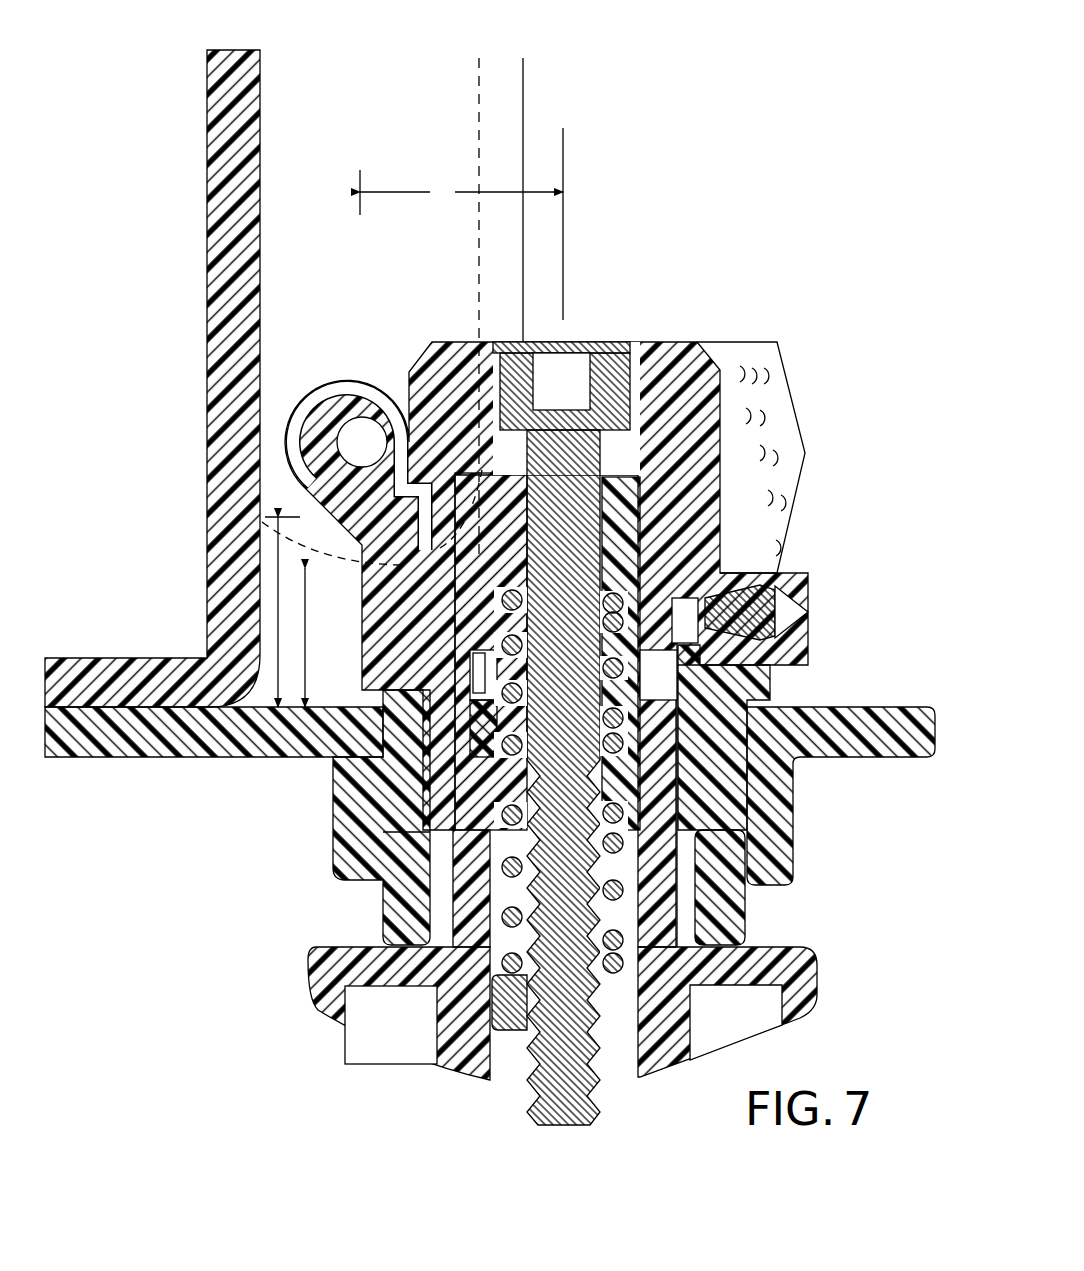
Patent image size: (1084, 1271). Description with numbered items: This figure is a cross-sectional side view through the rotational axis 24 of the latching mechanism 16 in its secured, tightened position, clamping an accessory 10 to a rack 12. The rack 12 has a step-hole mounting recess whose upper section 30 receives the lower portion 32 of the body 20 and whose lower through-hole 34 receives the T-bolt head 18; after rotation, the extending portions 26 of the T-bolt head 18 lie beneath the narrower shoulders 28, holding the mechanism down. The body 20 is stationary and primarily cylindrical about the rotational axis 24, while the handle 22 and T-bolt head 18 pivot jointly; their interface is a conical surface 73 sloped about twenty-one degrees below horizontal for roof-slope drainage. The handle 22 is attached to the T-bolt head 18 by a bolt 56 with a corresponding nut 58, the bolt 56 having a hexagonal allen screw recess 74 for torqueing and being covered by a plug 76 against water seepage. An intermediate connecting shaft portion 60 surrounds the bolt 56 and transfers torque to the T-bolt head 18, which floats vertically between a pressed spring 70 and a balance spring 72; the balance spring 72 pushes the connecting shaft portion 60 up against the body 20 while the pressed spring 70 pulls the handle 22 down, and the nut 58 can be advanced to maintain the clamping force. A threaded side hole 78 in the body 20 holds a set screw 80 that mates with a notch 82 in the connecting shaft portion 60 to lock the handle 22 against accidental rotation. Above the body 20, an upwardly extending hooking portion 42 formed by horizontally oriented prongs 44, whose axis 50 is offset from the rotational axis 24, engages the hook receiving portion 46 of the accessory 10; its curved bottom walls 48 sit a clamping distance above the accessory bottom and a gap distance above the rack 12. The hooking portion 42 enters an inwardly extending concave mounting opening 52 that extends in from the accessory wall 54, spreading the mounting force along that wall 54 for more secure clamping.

The accessory 10 is at (204, 375).
The rack 12 is at (505, 767).
The latching mechanism 16 is at (530, 593).
The T-bolt head 18 is at (558, 984).
The body 20 is at (494, 587).
The handle 22 is at (683, 348).
The rotational axis 24 is at (563, 173).
The extending portions 26 is at (322, 952).
The shoulders 28 is at (392, 912).
The upper section 30 is at (390, 770).
The lower portion 32 is at (747, 730).
The lower through-hole 34 is at (700, 890).
The hooking portion 42 is at (315, 423).
The horizontally oriented prongs 44 is at (333, 387).
The hook receiving portion 46 is at (262, 430).
The curved bottom walls 48 is at (372, 544).
The axis for the prongs 50 is at (362, 442).
The inwardly extending concave mounting opening 52 is at (325, 232).
The wall 54 is at (505, 85).
The bolt 56 is at (592, 477).
The nut 58 is at (515, 1022).
The intermediate connecting shaft portion 60 is at (650, 500).
The pressed spring 70 is at (695, 865).
The balance spring 72 is at (740, 562).
The conical surface 73 is at (745, 540).
The hexagonal allen screw recess 74 is at (595, 343).
The plug 76 is at (572, 343).
The threaded side hole 78 is at (800, 583).
The set screw 80 is at (780, 603).
The notch 82 is at (690, 600).